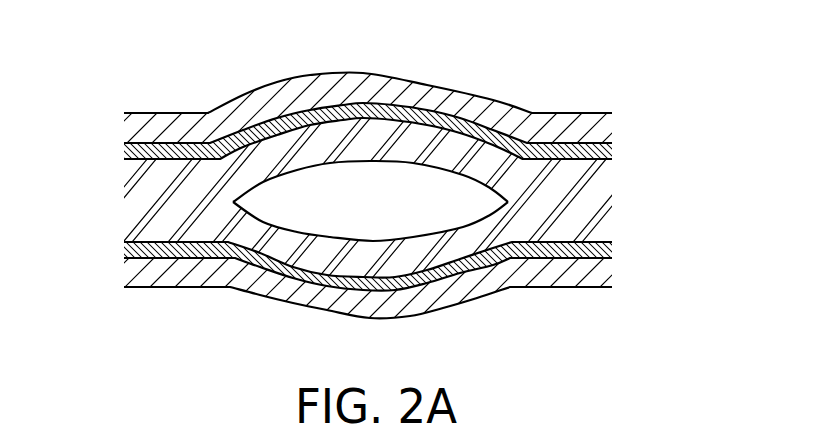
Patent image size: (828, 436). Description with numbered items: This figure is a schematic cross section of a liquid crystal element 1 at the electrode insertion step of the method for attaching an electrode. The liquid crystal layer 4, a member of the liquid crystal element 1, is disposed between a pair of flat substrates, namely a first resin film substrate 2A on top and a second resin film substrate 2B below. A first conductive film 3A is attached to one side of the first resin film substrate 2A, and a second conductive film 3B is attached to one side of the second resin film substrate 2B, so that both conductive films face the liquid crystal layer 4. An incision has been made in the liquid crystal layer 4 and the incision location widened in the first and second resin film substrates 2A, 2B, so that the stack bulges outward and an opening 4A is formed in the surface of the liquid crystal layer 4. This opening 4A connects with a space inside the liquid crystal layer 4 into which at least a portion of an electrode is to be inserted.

The liquid crystal element 1 is at (578, 88).
The first resin film substrate 2A is at (610, 127).
The second resin film substrate 2B is at (612, 270).
The first conductive film 3A is at (610, 155).
The second conductive film 3B is at (612, 243).
The liquid crystal layer 4 is at (138, 191).
The opening 4A is at (417, 213).